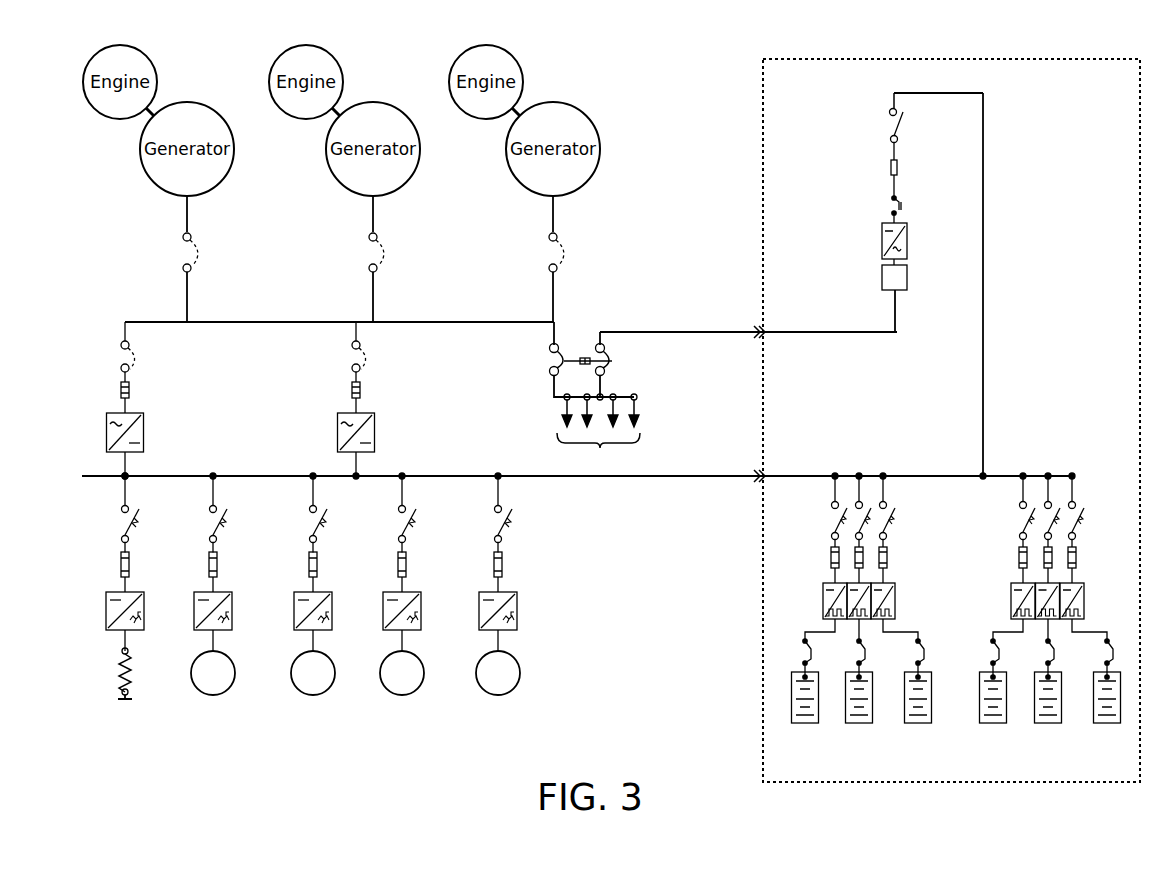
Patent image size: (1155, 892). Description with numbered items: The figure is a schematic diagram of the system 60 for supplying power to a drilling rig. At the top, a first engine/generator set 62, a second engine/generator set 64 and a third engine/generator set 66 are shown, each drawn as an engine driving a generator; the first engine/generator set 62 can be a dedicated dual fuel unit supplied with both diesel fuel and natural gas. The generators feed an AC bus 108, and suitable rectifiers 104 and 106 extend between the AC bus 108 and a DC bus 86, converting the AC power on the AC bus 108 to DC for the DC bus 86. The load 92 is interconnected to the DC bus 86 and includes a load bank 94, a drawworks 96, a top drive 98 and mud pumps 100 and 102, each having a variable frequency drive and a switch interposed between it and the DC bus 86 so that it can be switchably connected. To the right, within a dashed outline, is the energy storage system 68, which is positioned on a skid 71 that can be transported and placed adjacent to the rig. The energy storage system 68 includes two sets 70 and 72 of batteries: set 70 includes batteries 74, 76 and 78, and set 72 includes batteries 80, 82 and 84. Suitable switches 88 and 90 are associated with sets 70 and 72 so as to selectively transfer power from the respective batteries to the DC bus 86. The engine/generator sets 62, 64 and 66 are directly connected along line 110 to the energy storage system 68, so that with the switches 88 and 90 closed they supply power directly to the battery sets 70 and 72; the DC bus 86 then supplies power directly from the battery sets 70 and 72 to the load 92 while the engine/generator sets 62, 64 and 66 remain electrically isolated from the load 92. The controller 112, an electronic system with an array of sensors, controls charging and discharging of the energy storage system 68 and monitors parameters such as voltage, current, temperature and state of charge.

The system 60 is at (680, 92).
The first engine/generator set 62 is at (120, 155).
The second engine/generator set 64 is at (309, 148).
The third engine/generator set 66 is at (479, 148).
The energy storage system 68 is at (732, 575).
The set of batteries 70 is at (866, 737).
The skid 71 is at (762, 208).
The set of batteries 72 is at (1053, 741).
The battery 74 is at (807, 723).
The battery 76 is at (861, 723).
The battery 78 is at (920, 723).
The battery 80 is at (995, 723).
The battery 82 is at (1050, 723).
The battery 84 is at (1109, 723).
The DC bus 86 is at (713, 473).
The switch 88 is at (913, 537).
The switch 90 is at (998, 540).
The load 92 is at (337, 611).
The load bank 94 is at (135, 664).
The drawworks 96 is at (233, 662).
The top drive 98 is at (333, 662).
The mud pump 100 is at (422, 661).
The mud pump 102 is at (518, 661).
The rectifier 104 is at (144, 431).
The rectifier 106 is at (375, 431).
The AC bus 108 is at (470, 320).
The line 110 is at (663, 330).
The controller 112 is at (854, 257).